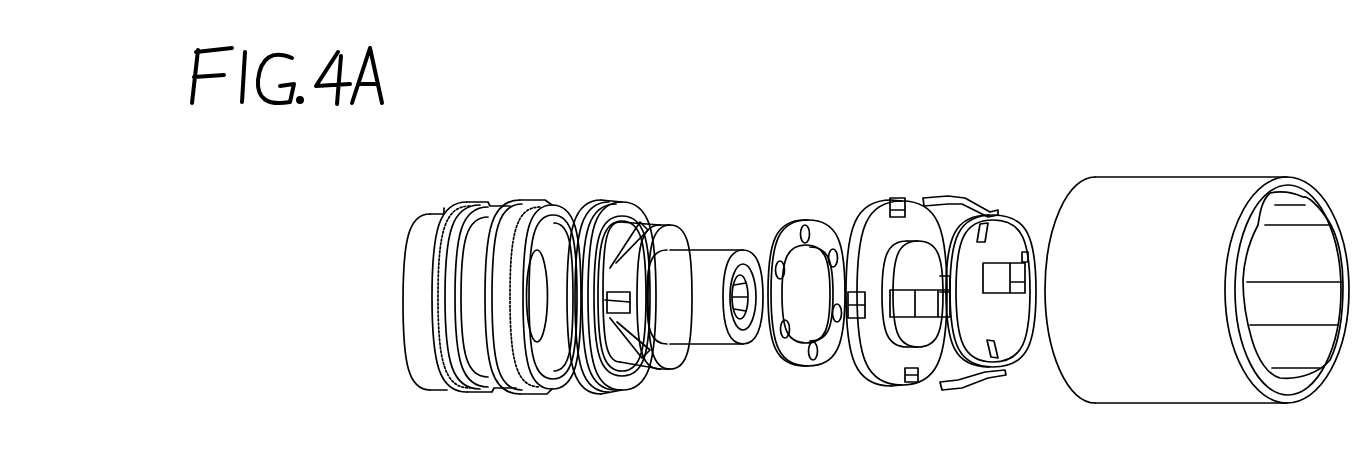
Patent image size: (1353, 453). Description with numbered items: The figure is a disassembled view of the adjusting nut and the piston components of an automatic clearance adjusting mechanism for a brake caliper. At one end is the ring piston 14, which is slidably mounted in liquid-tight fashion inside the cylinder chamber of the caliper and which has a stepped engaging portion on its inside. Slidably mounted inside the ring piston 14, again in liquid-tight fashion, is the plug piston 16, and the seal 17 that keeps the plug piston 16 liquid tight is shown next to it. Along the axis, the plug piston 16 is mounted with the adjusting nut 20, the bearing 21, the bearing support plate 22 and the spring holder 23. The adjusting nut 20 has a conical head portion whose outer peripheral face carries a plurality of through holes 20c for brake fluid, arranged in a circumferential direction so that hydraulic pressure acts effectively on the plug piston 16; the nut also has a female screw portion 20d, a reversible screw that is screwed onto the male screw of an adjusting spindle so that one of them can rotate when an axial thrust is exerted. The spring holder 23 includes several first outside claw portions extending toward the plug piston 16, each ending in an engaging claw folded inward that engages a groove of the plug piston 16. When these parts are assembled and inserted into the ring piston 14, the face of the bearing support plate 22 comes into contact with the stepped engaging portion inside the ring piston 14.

The ring piston 14 is at (1169, 175).
The plug piston 16 is at (503, 198).
The seal 17 is at (620, 198).
The adjusting nut 20 is at (705, 245).
The through holes 20c is at (617, 303).
The female screw portion 20d is at (753, 268).
The bearing 21 is at (822, 220).
The bearing support plate 22 is at (903, 202).
The spring holder 23 is at (987, 208).